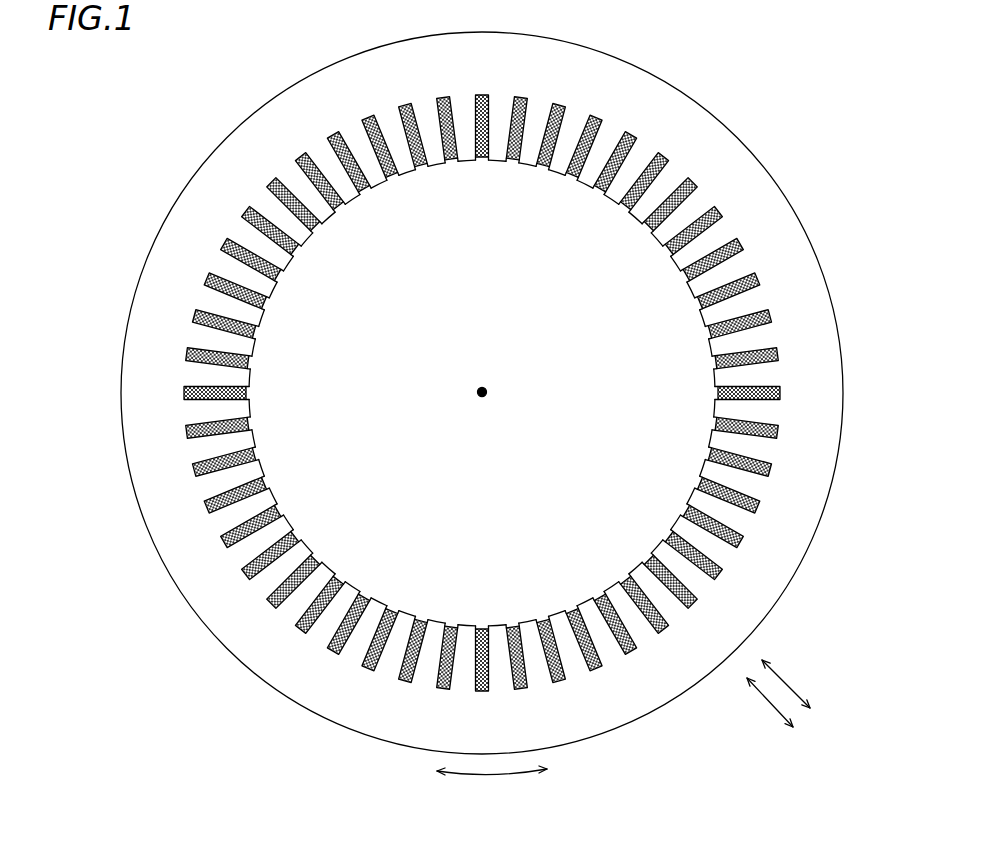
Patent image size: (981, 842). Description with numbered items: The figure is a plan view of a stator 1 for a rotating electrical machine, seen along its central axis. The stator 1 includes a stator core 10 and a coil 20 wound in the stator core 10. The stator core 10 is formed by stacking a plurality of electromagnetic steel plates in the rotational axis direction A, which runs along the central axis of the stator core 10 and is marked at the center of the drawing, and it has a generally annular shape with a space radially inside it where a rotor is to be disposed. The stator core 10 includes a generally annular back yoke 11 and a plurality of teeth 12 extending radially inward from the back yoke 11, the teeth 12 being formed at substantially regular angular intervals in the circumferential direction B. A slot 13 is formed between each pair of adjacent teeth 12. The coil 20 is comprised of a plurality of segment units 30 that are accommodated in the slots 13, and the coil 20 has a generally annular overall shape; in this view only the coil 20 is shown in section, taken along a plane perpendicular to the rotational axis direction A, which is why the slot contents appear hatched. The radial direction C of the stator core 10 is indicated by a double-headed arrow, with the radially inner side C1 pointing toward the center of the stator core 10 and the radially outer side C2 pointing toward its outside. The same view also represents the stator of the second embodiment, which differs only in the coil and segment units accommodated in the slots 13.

The stator 1 is at (514, 391).
The stator core 10 is at (482, 391).
The back yoke 11 is at (698, 135).
The teeth 12 is at (715, 283).
The slot 13 is at (683, 276).
The coil 20 is at (702, 179).
The segment units 30 is at (723, 212).
The rotational axis direction A is at (477, 394).
The circumferential direction B is at (492, 787).
The radial direction C is at (778, 693).
The radially inner side direction C1 is at (792, 664).
The radially outer side direction C2 is at (814, 688).